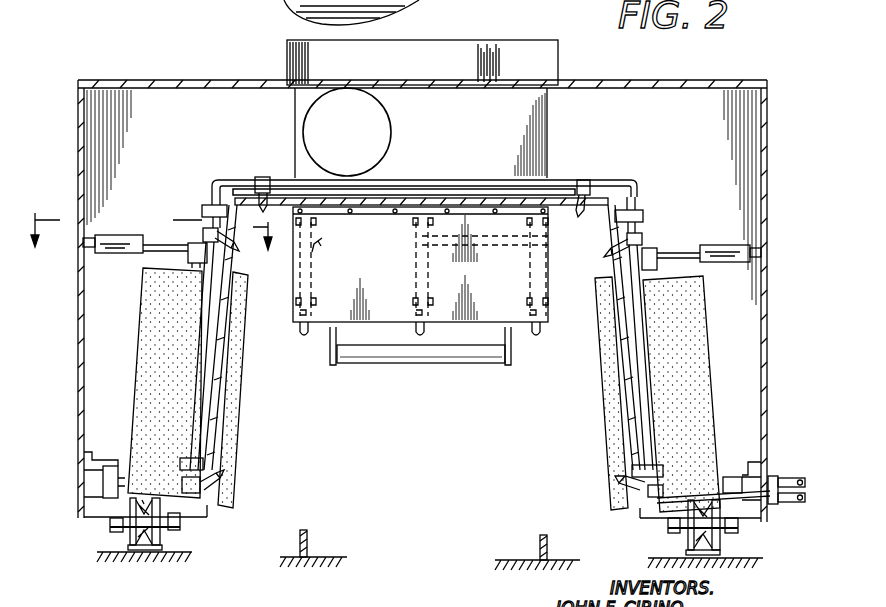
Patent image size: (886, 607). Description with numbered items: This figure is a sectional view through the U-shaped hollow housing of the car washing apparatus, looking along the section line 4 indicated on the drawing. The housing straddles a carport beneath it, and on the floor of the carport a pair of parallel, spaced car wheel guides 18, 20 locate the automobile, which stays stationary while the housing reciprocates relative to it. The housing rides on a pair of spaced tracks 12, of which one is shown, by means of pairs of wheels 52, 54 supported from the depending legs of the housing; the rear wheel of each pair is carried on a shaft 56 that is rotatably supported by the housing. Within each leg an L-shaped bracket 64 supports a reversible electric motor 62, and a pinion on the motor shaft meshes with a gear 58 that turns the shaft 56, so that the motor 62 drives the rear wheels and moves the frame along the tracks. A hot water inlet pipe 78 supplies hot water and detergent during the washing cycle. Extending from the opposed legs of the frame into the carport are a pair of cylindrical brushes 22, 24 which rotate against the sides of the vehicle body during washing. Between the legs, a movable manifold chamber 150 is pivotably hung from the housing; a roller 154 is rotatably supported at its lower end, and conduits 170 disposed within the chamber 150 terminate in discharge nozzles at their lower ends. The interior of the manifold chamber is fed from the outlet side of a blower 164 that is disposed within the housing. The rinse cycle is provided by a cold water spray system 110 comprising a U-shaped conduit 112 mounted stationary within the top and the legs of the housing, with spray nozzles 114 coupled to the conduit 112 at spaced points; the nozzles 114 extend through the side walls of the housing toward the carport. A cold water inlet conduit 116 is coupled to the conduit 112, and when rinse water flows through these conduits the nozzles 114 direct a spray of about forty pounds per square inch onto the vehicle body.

The section line 4- 4 is at (149, 243).
The track 12 is at (145, 553).
The car wheel guide 18 is at (302, 530).
The car wheel guide 20 is at (540, 535).
The cylindrical brush 22 is at (233, 397).
The cylindrical brush 24 is at (605, 392).
The wheel 52 is at (161, 536).
The wheel 54 is at (688, 538).
The shaft 56 is at (718, 542).
The gear 58 is at (128, 535).
The reversible electric motor 62 is at (117, 465).
The L-shaped bracket 64 is at (87, 453).
The hot water inlet pipe 78 is at (781, 477).
The cold water spray system 110 is at (243, 176).
The U-shaped conduit 112 is at (592, 185).
The spray nozzle 114 is at (612, 248).
The cold water inlet conduit 116 is at (790, 502).
The manifold chamber 150 is at (397, 275).
The roller 154 is at (430, 354).
The blower 164 is at (387, 132).
The conduit 170 is at (334, 239).